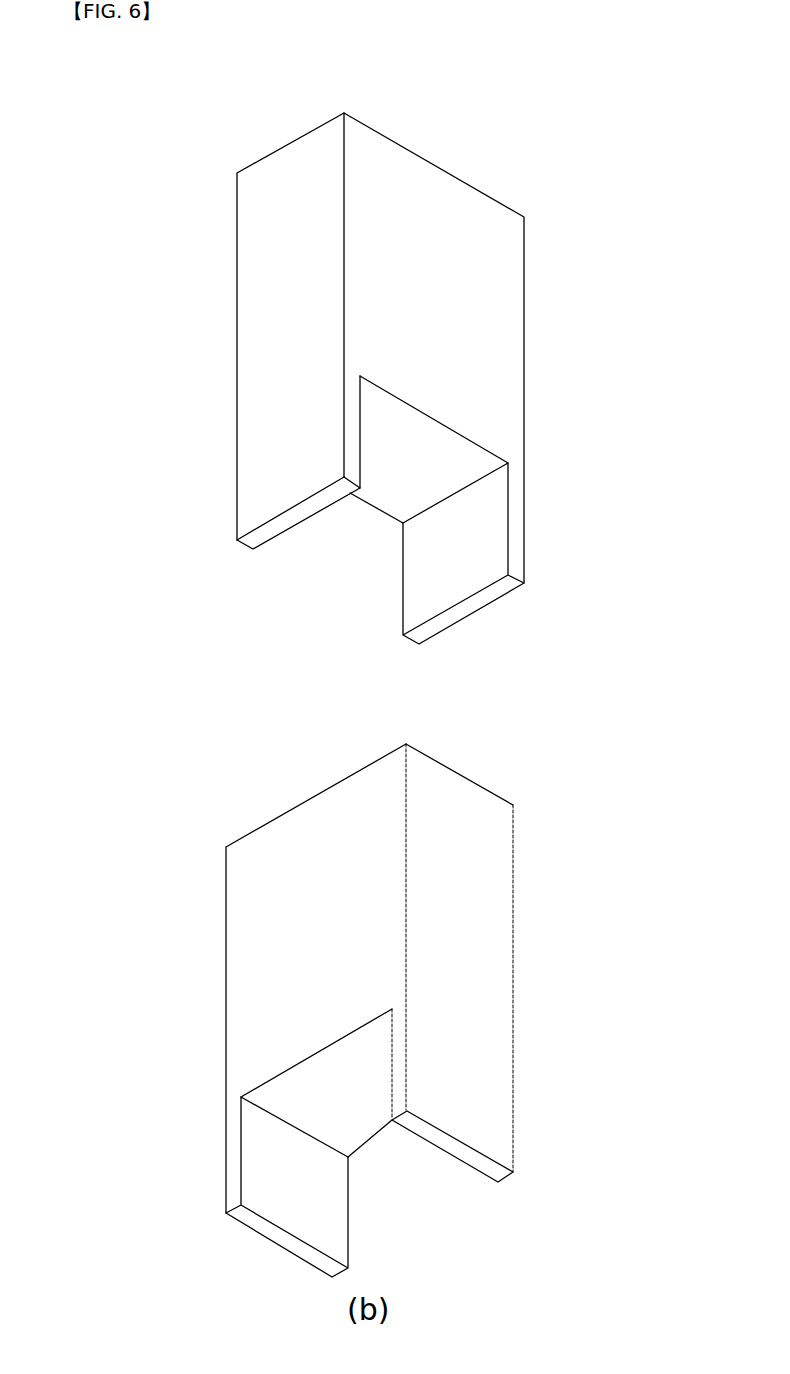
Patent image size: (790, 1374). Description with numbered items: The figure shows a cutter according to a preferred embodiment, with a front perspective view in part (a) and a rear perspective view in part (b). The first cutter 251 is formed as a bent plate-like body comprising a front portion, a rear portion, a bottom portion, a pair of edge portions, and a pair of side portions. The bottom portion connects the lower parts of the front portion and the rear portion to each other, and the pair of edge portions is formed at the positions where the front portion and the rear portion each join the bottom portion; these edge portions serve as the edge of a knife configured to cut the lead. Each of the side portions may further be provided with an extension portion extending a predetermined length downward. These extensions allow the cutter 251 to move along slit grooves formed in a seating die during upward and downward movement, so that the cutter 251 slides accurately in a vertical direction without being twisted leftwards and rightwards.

The first cutter 251 is at (141, 89).